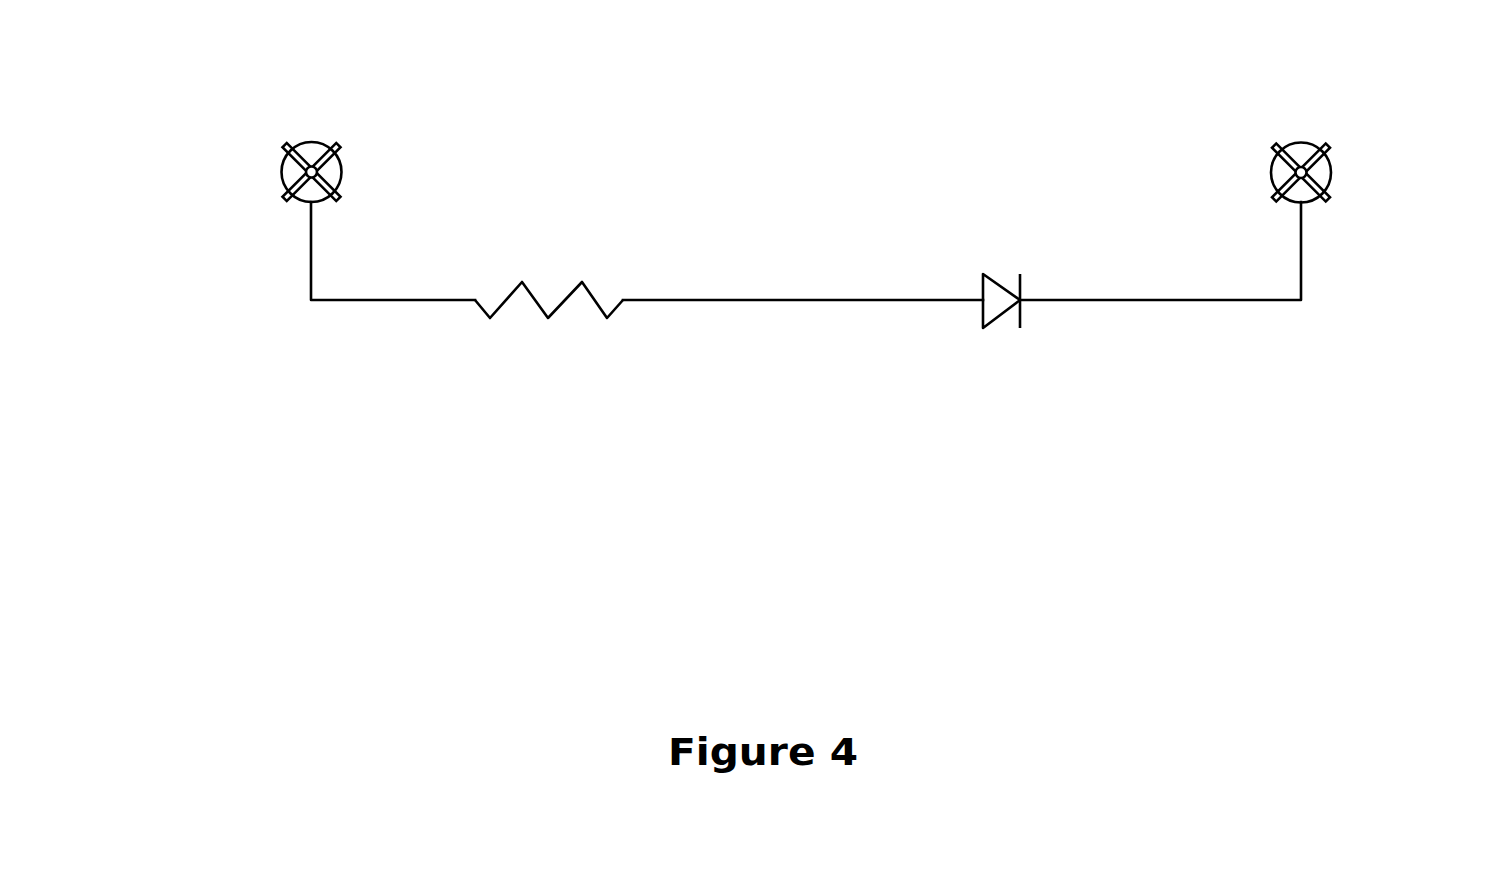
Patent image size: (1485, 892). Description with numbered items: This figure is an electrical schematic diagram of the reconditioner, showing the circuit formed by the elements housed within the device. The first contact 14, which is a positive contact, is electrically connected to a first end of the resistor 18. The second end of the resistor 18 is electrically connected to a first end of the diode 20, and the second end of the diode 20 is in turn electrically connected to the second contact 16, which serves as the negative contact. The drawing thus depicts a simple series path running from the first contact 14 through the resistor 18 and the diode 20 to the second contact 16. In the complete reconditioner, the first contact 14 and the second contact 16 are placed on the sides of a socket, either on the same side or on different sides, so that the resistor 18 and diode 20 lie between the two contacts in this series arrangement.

The first contact 14 is at (282, 178).
The second contact 16 is at (1331, 176).
The resistor 18 is at (583, 283).
The diode 20 is at (982, 295).